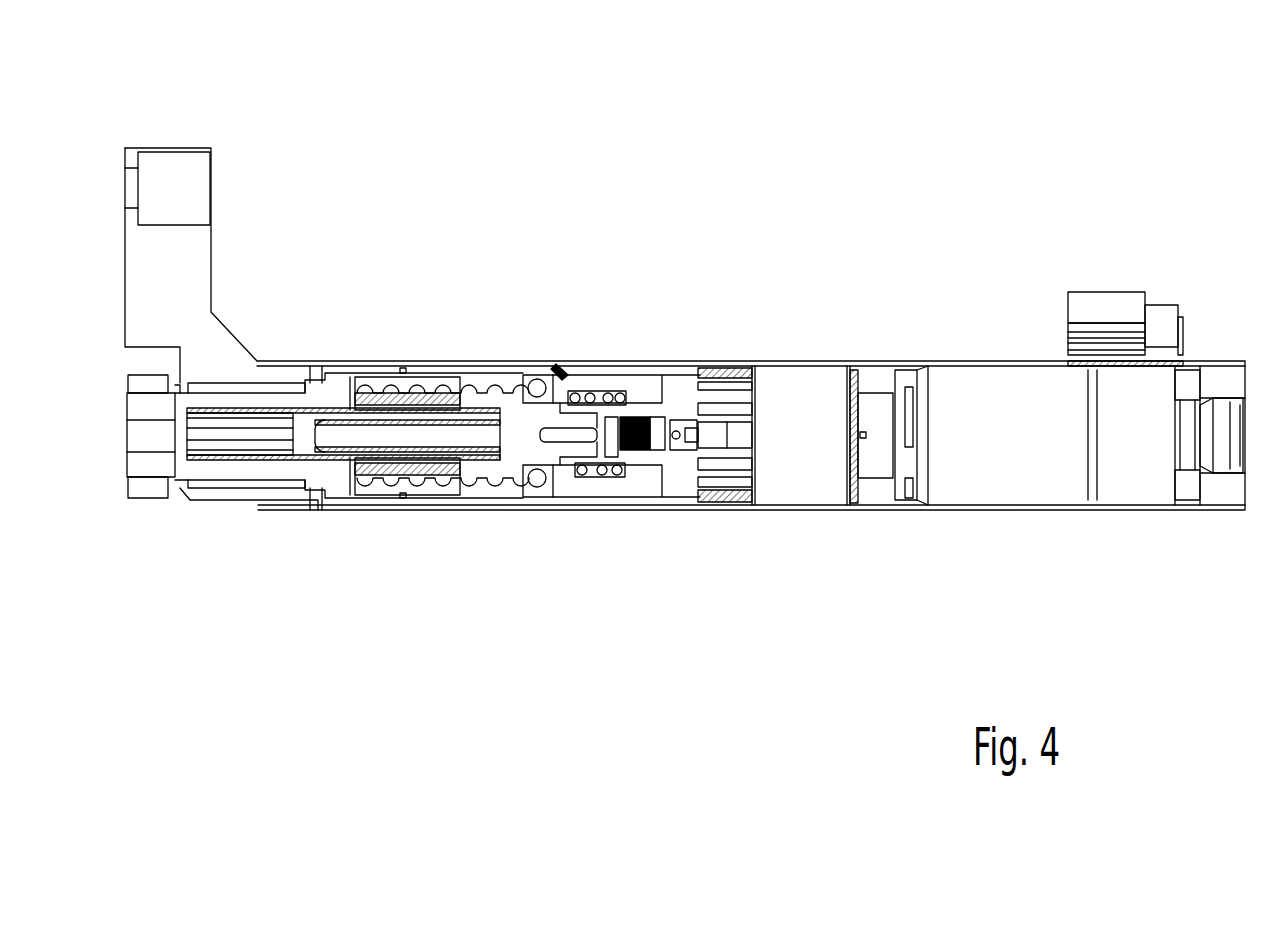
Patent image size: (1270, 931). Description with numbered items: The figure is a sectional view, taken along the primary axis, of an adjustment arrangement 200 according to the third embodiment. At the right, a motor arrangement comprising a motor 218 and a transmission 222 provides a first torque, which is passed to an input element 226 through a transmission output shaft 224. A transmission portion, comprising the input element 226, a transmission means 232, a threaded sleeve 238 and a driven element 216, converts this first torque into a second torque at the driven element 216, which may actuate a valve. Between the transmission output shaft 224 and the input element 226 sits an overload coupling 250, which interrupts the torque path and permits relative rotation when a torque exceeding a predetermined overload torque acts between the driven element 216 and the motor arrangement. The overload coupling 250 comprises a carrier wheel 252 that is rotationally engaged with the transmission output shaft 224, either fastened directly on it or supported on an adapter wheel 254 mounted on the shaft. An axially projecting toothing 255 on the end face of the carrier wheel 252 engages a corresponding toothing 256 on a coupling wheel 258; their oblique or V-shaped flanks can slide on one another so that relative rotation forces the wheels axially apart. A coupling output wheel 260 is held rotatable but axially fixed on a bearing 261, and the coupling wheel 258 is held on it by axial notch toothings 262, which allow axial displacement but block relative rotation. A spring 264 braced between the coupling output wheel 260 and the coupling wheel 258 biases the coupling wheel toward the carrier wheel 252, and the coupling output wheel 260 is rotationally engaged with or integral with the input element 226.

The adjustment arrangement 200 is at (1147, 132).
The driven element 216 is at (147, 485).
The motor 218 is at (1005, 441).
The transmission 222 is at (825, 447).
The transmission output shaft 224 is at (638, 415).
The input element 226 is at (513, 438).
The transmission means 232 is at (463, 483).
The threaded sleeve 238 is at (423, 493).
The overload coupling 250 is at (560, 367).
The carrier wheel 252 is at (636, 385).
The adapter wheel 254 is at (647, 405).
The toothing 255 is at (613, 470).
The toothing 256 is at (625, 472).
The coupling wheel 258 is at (585, 470).
The coupling output wheel 260 is at (578, 468).
The bearing 261 is at (525, 370).
The axial notch toothings 262 is at (595, 475).
The spring 264 is at (575, 482).